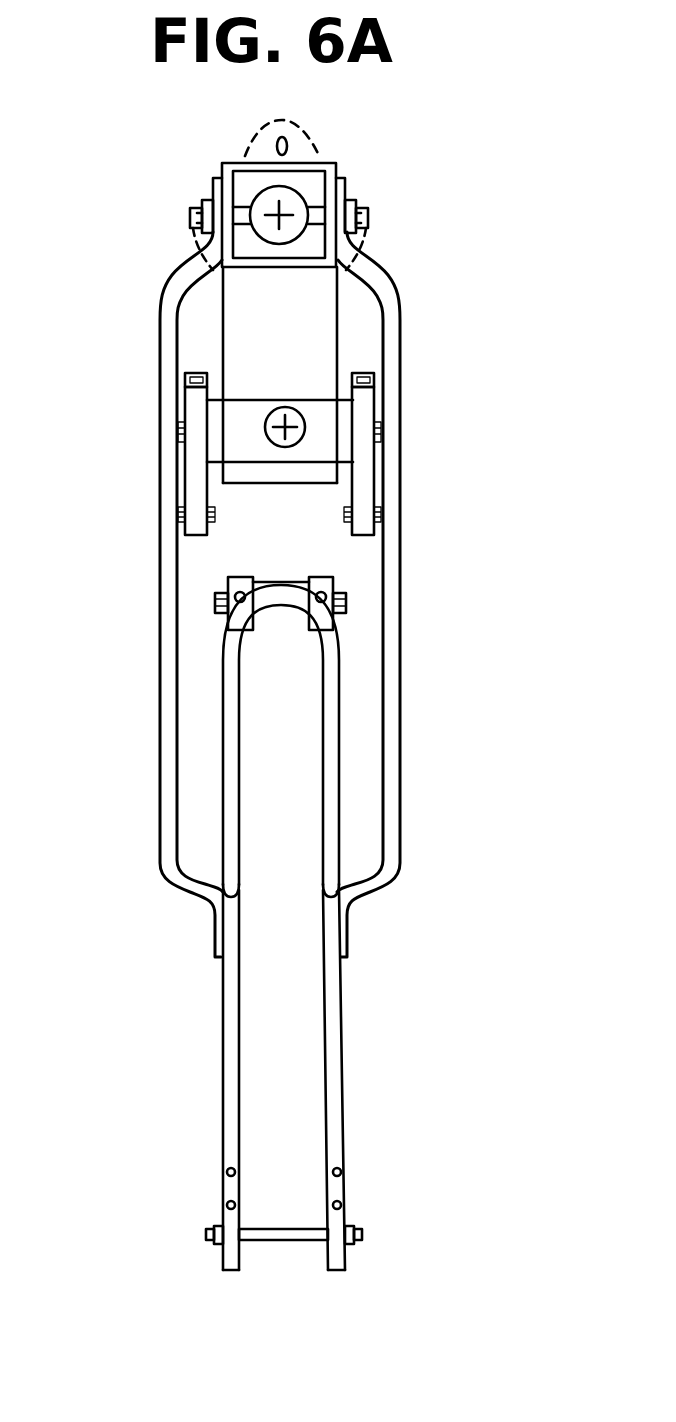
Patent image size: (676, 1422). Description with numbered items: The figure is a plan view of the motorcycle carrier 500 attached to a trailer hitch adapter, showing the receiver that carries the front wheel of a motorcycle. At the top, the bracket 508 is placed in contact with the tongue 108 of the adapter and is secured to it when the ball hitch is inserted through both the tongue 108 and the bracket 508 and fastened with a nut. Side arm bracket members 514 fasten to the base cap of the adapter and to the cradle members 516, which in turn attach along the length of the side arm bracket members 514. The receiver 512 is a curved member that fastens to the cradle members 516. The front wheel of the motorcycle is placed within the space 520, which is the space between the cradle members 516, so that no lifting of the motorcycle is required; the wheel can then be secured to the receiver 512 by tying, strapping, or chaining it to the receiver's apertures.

The tongue 108 is at (277, 328).
The motorcycle carrier 500 is at (444, 546).
The bracket 508 is at (325, 428).
The receiver 512 is at (252, 618).
The side arm bracket member 514 is at (178, 280).
The cradle member 516 is at (337, 1005).
The space 520 is at (310, 1130).